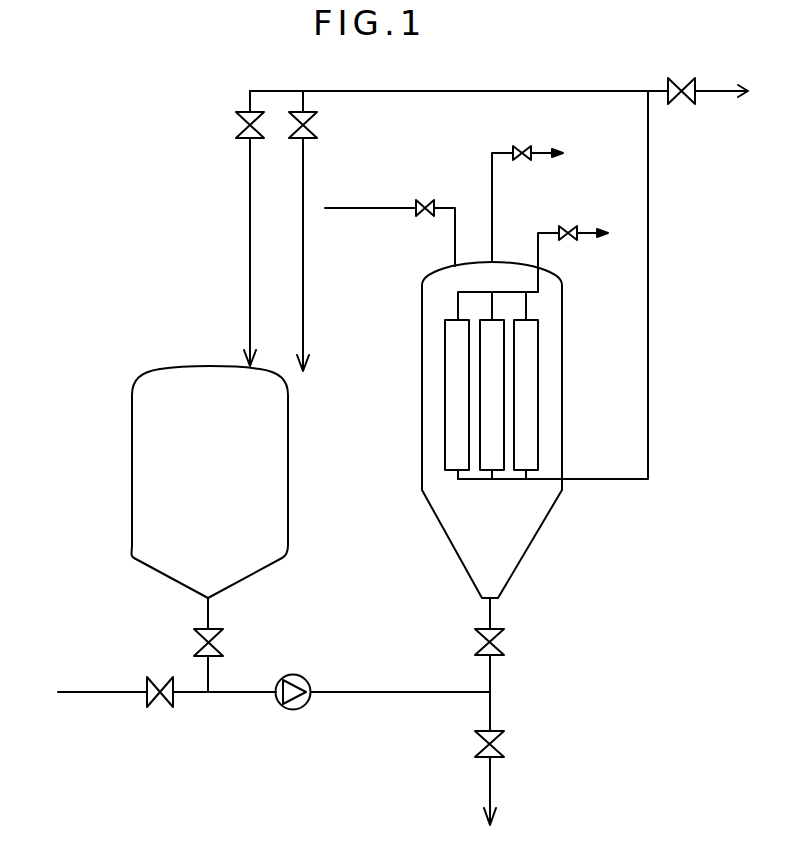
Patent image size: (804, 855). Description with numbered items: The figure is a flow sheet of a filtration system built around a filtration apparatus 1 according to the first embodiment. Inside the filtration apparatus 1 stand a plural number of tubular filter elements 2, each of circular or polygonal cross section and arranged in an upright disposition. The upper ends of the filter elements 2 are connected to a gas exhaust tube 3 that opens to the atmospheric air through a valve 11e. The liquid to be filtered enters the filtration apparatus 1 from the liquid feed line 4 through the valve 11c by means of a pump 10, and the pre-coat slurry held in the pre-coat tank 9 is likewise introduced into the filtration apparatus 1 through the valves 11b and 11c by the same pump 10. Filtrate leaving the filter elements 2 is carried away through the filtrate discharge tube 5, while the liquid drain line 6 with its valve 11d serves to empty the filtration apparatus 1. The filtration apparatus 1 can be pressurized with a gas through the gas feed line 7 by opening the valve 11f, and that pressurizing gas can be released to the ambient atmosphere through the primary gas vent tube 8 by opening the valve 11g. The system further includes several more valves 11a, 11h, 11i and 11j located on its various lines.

The filtration apparatus 1 is at (422, 351).
The tubular filter elements 2 is at (538, 388).
The gas exhaust tube 3 is at (540, 284).
The liquid feed line 4 is at (401, 692).
The filtrate discharge tube 5 is at (614, 480).
The liquid drain line 6 is at (491, 785).
The gas feed line 7 is at (455, 235).
The primary gas vent tube 8 is at (493, 226).
The pre-coat tank 9 is at (132, 470).
The pump 10 is at (294, 710).
The valve 11a is at (163, 708).
The valve 11b is at (224, 645).
The valve 11c is at (504, 642).
The valve 11d is at (504, 744).
The valve 11e is at (568, 226).
The valve 11f is at (425, 200).
The valve 11g is at (522, 146).
The valve 11h is at (680, 78).
The valve 11i is at (318, 125).
The valve 11j is at (236, 125).